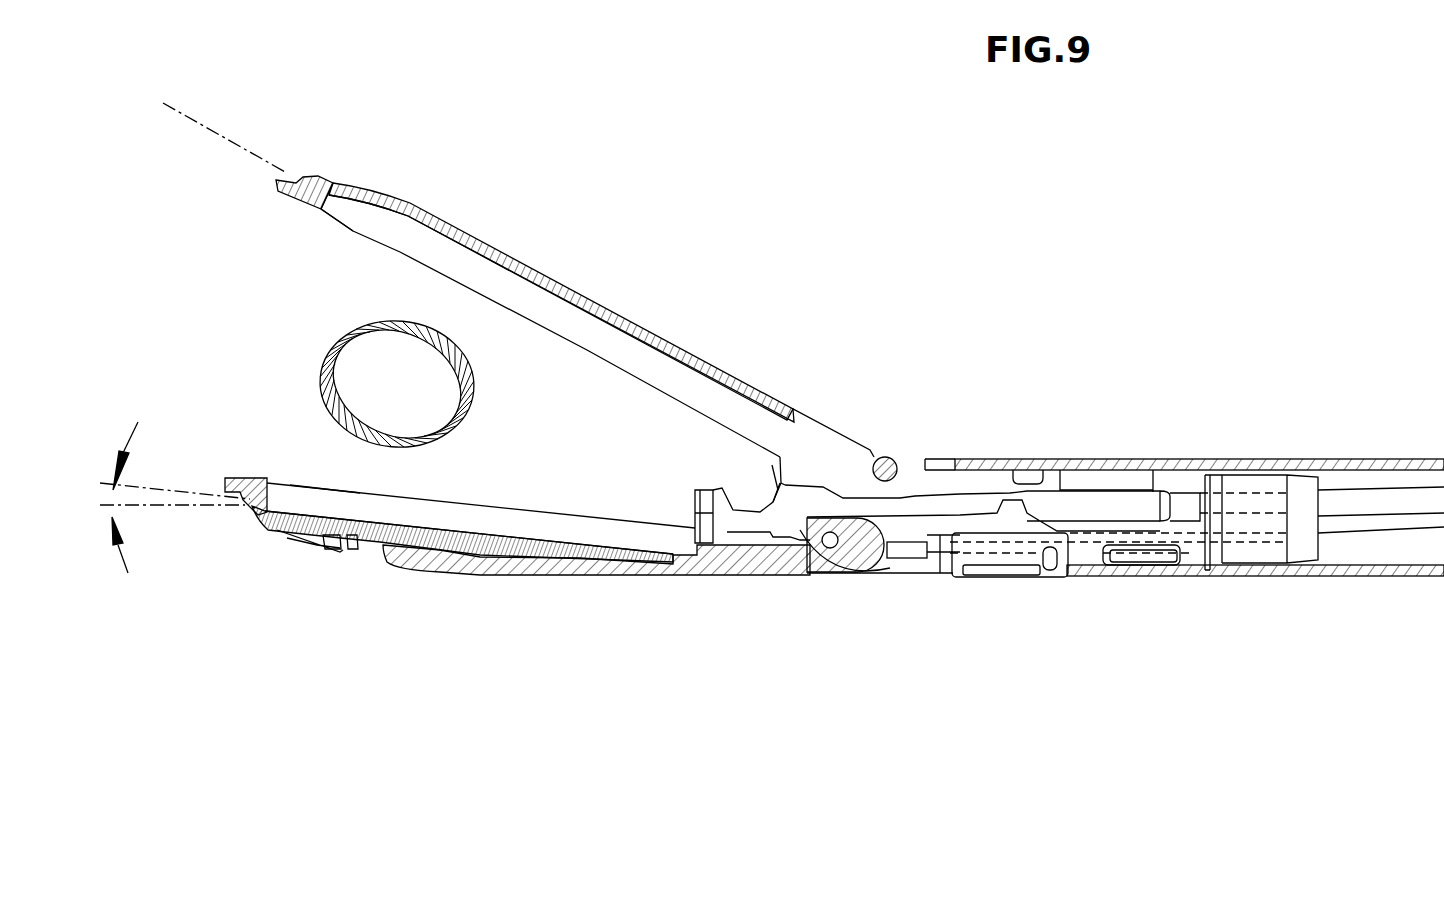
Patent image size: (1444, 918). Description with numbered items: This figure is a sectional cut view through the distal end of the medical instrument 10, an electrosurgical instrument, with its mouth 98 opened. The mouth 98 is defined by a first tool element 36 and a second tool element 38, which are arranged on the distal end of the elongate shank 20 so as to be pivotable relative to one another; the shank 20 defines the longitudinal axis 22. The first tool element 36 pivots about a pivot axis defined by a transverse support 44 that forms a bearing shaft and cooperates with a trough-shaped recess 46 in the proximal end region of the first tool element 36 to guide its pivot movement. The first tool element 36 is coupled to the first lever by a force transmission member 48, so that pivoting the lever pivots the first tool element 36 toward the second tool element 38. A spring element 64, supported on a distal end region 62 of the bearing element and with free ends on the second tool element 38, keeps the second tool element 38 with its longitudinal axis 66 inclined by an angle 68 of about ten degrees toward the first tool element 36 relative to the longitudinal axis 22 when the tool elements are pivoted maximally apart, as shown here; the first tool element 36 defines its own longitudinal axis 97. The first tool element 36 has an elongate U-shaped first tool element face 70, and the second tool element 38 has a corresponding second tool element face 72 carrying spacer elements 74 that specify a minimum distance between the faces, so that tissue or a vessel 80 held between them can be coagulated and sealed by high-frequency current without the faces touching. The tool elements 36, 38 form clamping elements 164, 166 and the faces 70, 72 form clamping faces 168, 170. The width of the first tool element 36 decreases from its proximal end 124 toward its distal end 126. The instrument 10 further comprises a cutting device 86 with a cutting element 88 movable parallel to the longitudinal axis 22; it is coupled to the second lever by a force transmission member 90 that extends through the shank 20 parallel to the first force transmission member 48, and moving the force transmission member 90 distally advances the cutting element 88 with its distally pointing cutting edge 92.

The medical instrument 10 is at (1020, 310).
The elongate shank 20 is at (1105, 576).
The longitudinal axis 22 is at (200, 506).
The first tool element 36 is at (640, 324).
The second tool element 38 is at (528, 600).
The transverse support 44 is at (900, 463).
The trough-shaped recess 46 is at (884, 463).
The force transmission member 48 is at (1367, 525).
The distal end region 62 is at (400, 562).
The spring element 64 is at (368, 542).
The longitudinal axis 66 is at (165, 490).
The angle 68 is at (113, 491).
The first tool element face 70 is at (323, 210).
The second tool element face 72 is at (270, 478).
The spacer elements 74 is at (392, 486).
The vessel 80 is at (330, 340).
The cutting device 86 is at (748, 493).
The cutting element 88 is at (719, 488).
The force transmission member 90 is at (1390, 505).
The cutting edge 92 is at (695, 494).
The longitudinal axis 97 is at (204, 124).
The mouth 98 is at (543, 267).
The proximal end 124 is at (902, 518).
The distal end 126 is at (272, 160).
The clamping element 164 is at (428, 213).
The clamping element 166 is at (543, 560).
The clamping face 168 is at (337, 221).
The clamping face 170 is at (327, 488).